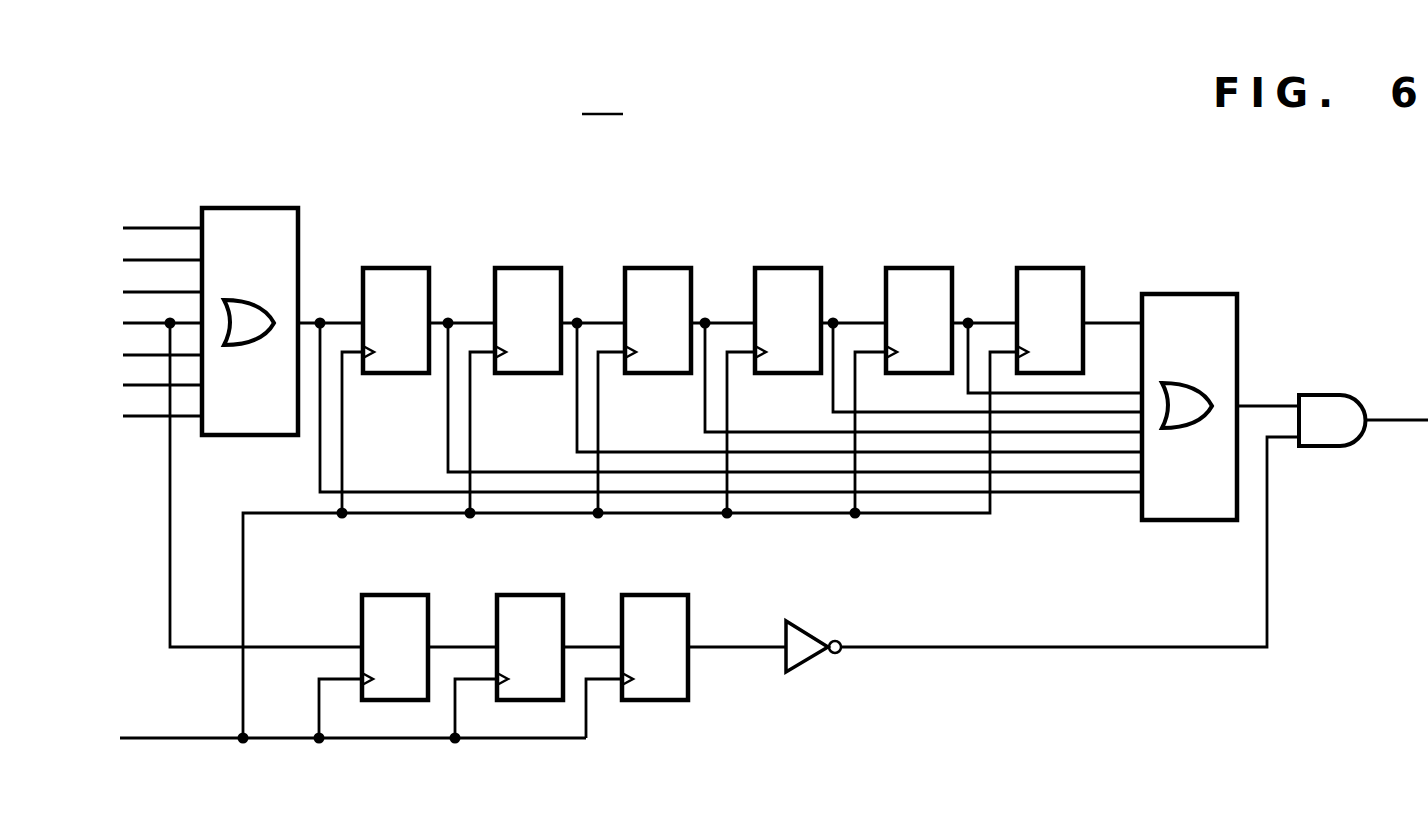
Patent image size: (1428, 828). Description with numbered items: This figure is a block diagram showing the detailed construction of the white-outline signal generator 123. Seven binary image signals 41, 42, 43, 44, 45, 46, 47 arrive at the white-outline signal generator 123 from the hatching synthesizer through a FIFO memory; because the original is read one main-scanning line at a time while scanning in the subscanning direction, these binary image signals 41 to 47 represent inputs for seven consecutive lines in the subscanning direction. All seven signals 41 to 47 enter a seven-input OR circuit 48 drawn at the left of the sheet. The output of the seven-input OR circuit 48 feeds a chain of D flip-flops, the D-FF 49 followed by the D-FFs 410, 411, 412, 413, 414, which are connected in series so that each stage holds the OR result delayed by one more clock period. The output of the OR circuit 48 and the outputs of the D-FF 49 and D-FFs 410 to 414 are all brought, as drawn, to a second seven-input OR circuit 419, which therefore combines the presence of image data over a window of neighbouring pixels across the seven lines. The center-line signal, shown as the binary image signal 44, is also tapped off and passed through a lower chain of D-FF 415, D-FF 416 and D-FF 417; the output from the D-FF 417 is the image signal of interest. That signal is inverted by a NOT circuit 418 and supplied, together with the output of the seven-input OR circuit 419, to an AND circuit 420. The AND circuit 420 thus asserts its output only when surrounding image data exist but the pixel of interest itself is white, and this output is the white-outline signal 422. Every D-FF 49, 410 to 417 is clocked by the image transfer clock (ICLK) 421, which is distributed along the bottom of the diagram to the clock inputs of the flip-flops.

The white-outline signal generator 123 is at (603, 102).
The binary image signal 41 is at (138, 228).
The binary image signal 42 is at (138, 260).
The binary image signal 43 is at (138, 292).
The binary image signal 44 is at (138, 323).
The binary image signal 45 is at (138, 355).
The binary image signal 46 is at (138, 385).
The binary image signal 47 is at (138, 416).
The seven-input OR circuit 48 is at (270, 208).
The D-FF 49 is at (407, 268).
The D-FF 410 is at (538, 268).
The D-FF 411 is at (668, 268).
The D-FF 412 is at (798, 268).
The D-FF 413 is at (930, 268).
The D-FF 414 is at (1060, 268).
The D-FF 415 is at (405, 595).
The D-FF 416 is at (537, 595).
The D-FF 417 is at (665, 595).
The NOT circuit 418 is at (812, 637).
The seven-input OR circuit 419 is at (1205, 294).
The AND circuit 420 is at (1320, 395).
The image transfer clock (ICLK) 421 is at (150, 738).
The output white-outline signal 422 is at (1391, 420).